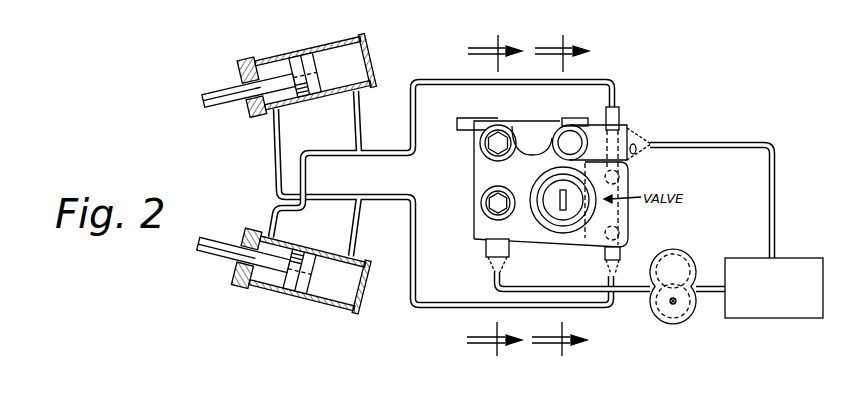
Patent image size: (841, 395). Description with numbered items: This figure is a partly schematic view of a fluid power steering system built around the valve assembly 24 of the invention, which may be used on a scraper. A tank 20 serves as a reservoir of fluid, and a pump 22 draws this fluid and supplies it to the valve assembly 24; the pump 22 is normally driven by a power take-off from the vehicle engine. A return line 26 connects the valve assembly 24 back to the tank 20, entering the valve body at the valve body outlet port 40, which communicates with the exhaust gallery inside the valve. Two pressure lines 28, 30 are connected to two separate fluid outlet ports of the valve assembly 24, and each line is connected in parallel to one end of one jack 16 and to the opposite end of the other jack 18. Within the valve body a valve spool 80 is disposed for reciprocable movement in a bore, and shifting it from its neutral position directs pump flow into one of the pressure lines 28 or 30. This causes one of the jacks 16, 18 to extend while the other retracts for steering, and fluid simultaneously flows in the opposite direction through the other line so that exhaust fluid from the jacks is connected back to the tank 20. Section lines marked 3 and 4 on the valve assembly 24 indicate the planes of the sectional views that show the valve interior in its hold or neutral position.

The jack 16 is at (285, 58).
The jack 18 is at (268, 288).
The tank 20 is at (793, 272).
The pump 22 is at (675, 262).
The valve assembly 24 is at (527, 130).
The return line 26 is at (662, 143).
The pressure line 28 is at (433, 85).
The pressure line 30 is at (414, 273).
The valve body outlet port 40 is at (577, 129).
The valve spool 80 is at (551, 216).
The section line 3- 3 is at (570, 195).
The section line 4- 4 is at (479, 195).